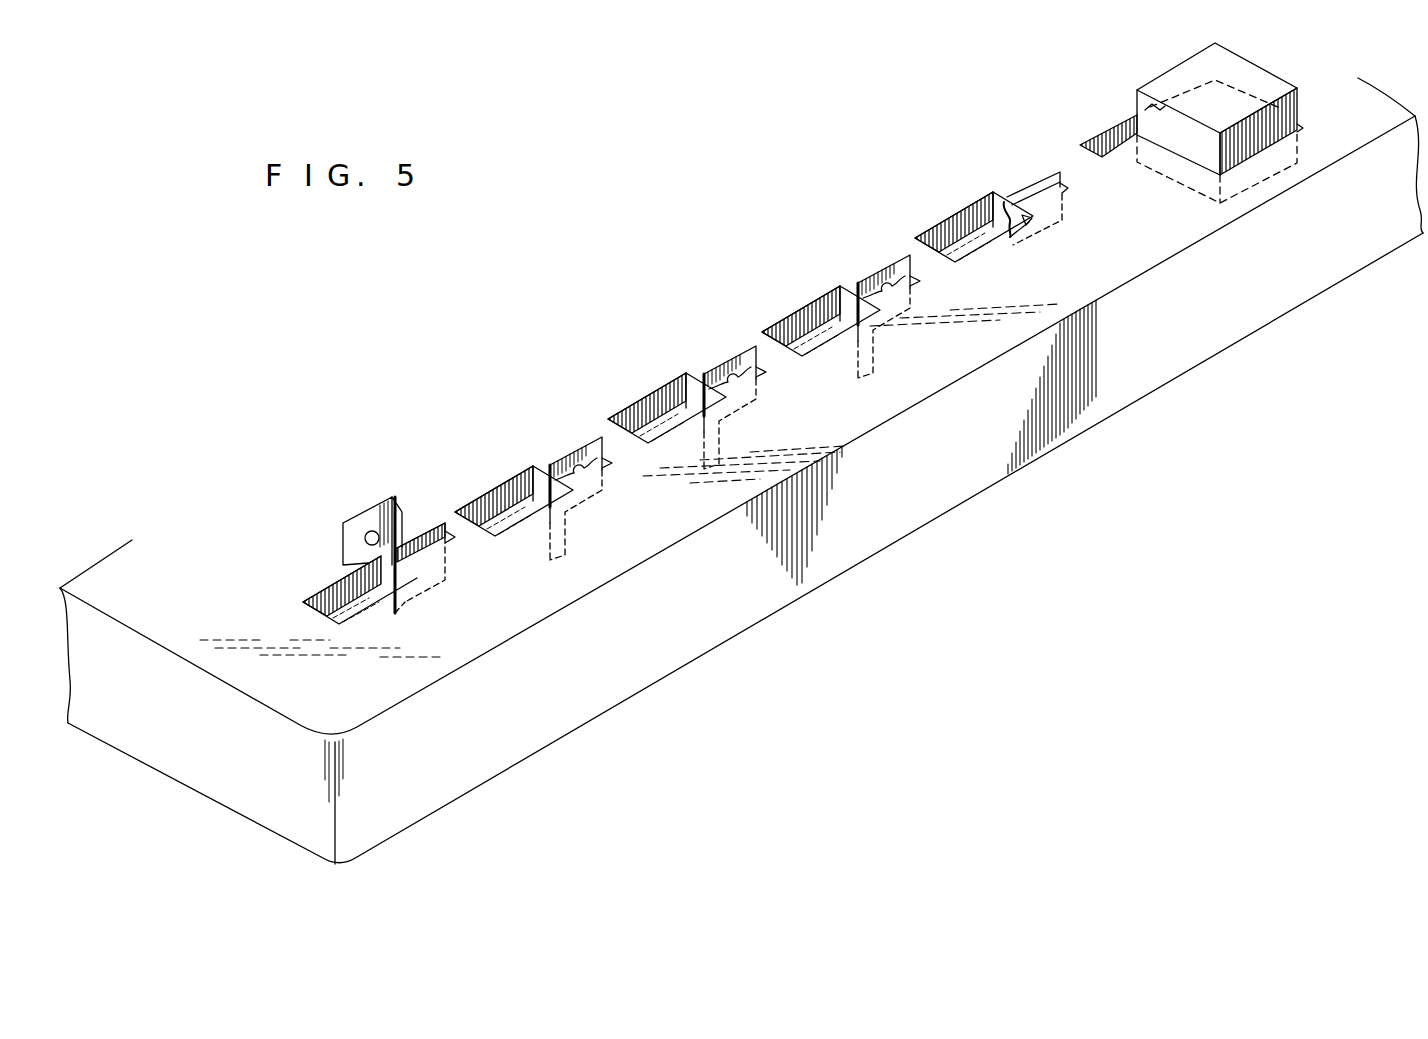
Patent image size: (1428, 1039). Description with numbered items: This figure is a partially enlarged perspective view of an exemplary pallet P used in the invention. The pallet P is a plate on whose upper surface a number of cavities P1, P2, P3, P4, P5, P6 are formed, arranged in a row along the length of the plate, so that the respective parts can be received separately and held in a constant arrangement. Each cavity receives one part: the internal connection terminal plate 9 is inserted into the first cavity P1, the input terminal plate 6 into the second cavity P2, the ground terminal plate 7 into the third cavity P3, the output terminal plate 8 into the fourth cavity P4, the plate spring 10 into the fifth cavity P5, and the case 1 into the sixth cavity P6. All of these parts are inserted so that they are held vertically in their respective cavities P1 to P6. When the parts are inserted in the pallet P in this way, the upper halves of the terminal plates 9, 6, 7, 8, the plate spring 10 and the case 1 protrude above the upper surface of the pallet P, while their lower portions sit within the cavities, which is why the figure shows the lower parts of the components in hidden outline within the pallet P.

The case 1 is at (1168, 72).
The input terminal plate 6 is at (573, 450).
The ground terminal plate 7 is at (728, 354).
The output terminal plate 8 is at (882, 268).
The internal connection terminal plate 9 is at (383, 502).
The plate spring 10 is at (1027, 182).
The pallet P is at (942, 518).
The cavity P1 is at (333, 597).
The cavity P2 is at (502, 497).
The cavity P3 is at (649, 408).
The cavity P4 is at (798, 305).
The cavity P5 is at (953, 223).
The cavity P6 is at (1113, 123).